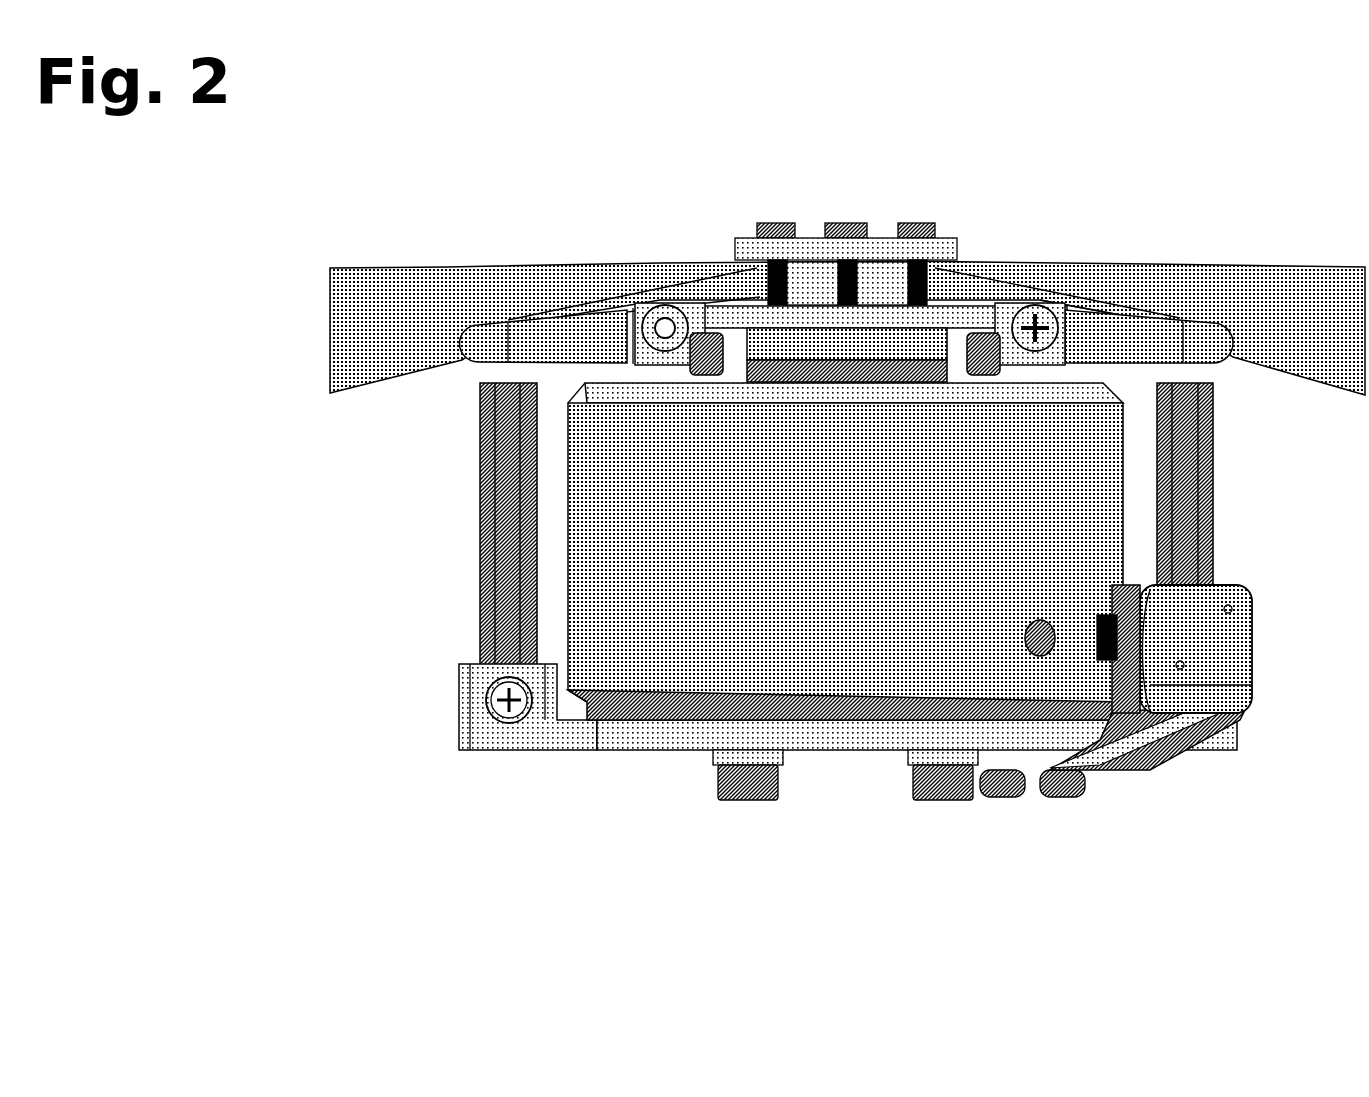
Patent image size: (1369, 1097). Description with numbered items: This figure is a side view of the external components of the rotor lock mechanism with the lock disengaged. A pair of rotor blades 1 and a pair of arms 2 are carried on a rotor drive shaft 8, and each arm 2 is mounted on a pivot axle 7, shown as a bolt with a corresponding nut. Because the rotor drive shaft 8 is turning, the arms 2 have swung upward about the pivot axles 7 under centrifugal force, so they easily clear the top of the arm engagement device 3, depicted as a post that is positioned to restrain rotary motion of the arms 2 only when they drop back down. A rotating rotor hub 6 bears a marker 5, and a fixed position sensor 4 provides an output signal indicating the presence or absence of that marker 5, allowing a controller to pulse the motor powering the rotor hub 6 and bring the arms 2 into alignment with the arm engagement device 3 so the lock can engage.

The rotor blades 1 is at (367, 290).
The arms 2 is at (488, 350).
The arm engagement device 3 is at (503, 572).
The fixed position sensor 4 is at (1130, 638).
The marker 5 is at (1043, 642).
The rotor hub 6 is at (733, 598).
The pivot axle 7 is at (665, 305).
The rotor drive shaft 8 is at (815, 275).